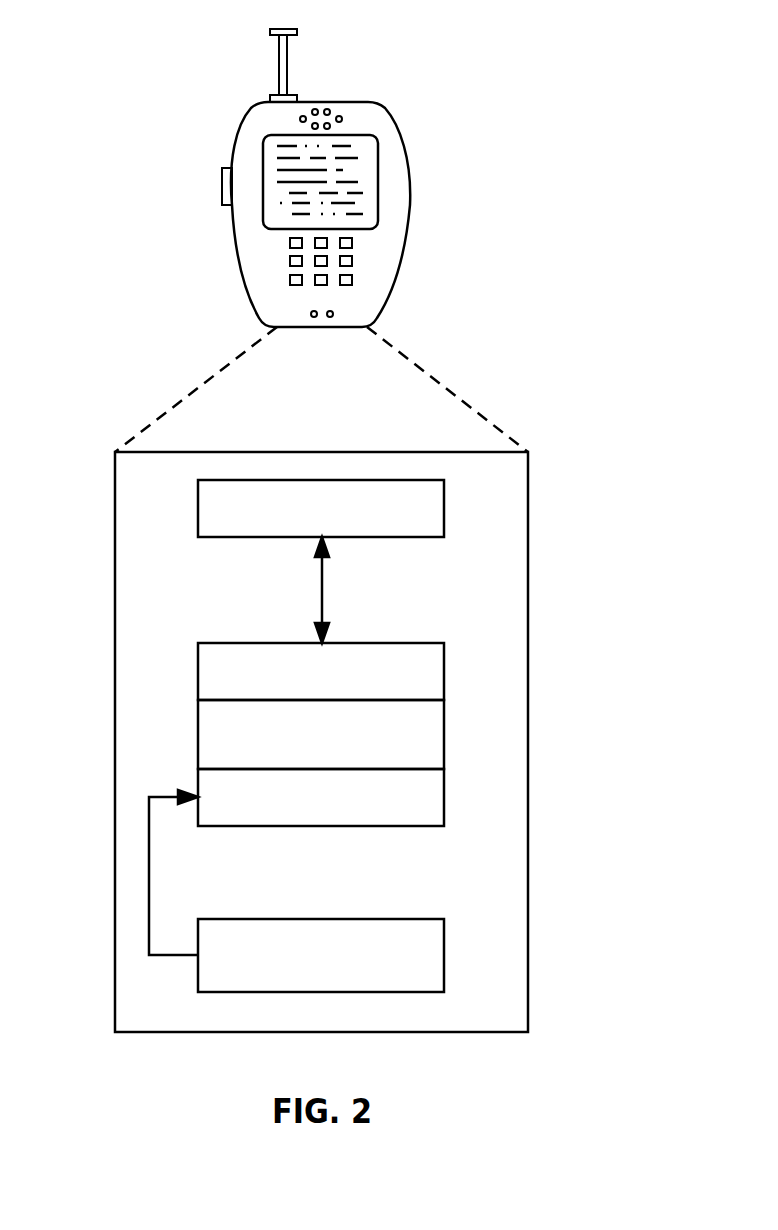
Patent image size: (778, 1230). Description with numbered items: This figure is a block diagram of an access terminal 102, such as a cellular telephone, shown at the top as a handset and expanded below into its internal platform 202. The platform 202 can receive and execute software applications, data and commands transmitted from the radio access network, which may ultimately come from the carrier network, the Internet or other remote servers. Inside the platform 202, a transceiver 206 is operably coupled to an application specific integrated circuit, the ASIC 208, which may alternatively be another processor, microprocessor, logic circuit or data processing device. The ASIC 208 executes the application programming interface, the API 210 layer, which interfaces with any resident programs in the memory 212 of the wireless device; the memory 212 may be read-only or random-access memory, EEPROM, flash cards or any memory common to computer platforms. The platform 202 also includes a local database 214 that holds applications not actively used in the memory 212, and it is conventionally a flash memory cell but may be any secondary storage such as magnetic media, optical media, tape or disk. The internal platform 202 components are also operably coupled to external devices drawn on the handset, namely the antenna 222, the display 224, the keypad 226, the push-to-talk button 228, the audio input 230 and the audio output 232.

The access terminal 102 is at (387, 305).
The platform 202 is at (115, 525).
The transceiver 206 is at (444, 508).
The application specific integrated circuit 208 is at (444, 674).
The application programming interface 210 is at (444, 733).
The memory 212 is at (444, 791).
The local database 214 is at (368, 919).
The antenna 222 is at (288, 45).
The display 224 is at (379, 165).
The keypad 226 is at (353, 260).
The push-to-talk button 228 is at (222, 185).
The audio input 230 is at (311, 314).
The audio output 232 is at (343, 119).